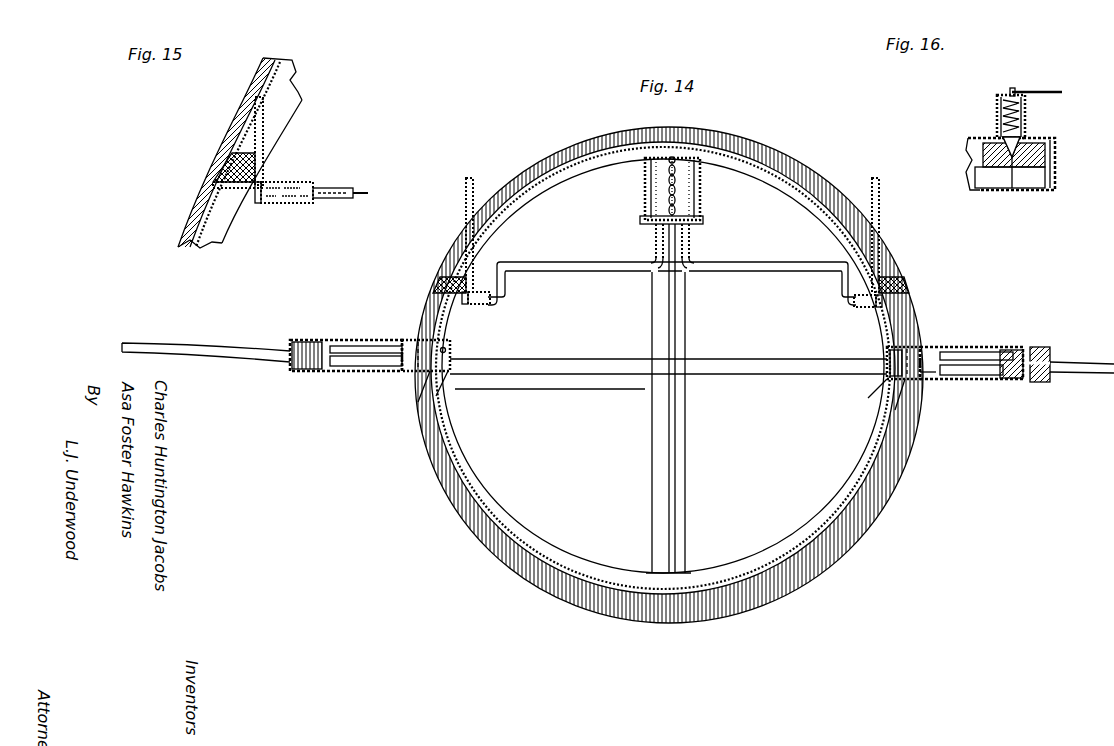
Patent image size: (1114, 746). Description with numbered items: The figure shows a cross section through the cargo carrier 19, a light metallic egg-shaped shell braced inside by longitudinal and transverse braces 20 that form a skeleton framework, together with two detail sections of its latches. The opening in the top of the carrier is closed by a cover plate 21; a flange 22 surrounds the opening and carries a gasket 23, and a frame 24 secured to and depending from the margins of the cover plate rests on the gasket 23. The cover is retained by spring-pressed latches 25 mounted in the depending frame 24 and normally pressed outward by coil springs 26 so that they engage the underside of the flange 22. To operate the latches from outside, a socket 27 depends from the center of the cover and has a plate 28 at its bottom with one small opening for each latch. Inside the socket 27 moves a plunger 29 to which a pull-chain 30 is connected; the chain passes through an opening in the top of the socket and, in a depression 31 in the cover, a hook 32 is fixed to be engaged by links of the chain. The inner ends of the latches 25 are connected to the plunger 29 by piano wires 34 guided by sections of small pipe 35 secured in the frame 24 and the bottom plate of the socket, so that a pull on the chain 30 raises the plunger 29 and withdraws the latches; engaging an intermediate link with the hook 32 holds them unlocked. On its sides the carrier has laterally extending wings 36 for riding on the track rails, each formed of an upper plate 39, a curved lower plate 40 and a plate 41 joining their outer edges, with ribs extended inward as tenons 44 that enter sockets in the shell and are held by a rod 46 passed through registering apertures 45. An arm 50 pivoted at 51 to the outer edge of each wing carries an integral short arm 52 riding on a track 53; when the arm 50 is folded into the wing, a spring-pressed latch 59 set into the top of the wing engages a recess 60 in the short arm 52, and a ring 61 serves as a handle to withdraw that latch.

In FIG. 14, the cargo carrier 19 is at (492, 553).
In FIG. 14, the braces 20 is at (654, 403).
In FIG. 14, the cover plate 21 is at (548, 176).
In FIG. 15, the cover plate 21 is at (232, 132).
In FIG. 14, the flange 22 is at (426, 295).
In FIG. 15, the flange 22 is at (205, 190).
In FIG. 14, the gasket 23 is at (436, 284).
In FIG. 15, the gasket 23 is at (222, 168).
In FIG. 14, the frame 24 is at (474, 272).
In FIG. 15, the frame 24 is at (266, 152).
In FIG. 14, the spring-pressed latches 25 is at (463, 304).
In FIG. 15, the spring-pressed latches 25 is at (256, 200).
In FIG. 14, the coil springs 26 is at (480, 305).
In FIG. 15, the coil springs 26 is at (286, 204).
In FIG. 14, the socket 27 is at (644, 196).
In FIG. 14, the plate 28 is at (692, 233).
In FIG. 14, the plunger 29 is at (704, 220).
In FIG. 14, the pull-chain 30 is at (690, 204).
In FIG. 14, the depression 31 is at (677, 158).
In FIG. 14, the hook 32 is at (668, 157).
In FIG. 15, the piano wires 34 is at (362, 195).
In FIG. 14, the sections of small pipe 35 is at (594, 264).
In FIG. 15, the sections of small pipe 35 is at (340, 181).
In FIG. 14, the wings 36 is at (372, 368).
In FIG. 16, the wings 36 is at (972, 180).
In FIG. 14, the upper plate 39 is at (357, 339).
In FIG. 16, the upper plate 39 is at (980, 138).
In FIG. 14, the lower plate 40 is at (340, 370).
In FIG. 16, the lower plate 40 is at (990, 191).
In FIG. 16, the plate 41 is at (1052, 168).
In FIG. 14, the tenons 44 is at (426, 375).
In FIG. 14, the registering apertures 45 is at (448, 350).
In FIG. 14, the rod 46 is at (462, 358).
In FIG. 14, the arm 50 is at (244, 352).
In FIG. 14, the pivot 51 is at (1038, 346).
In FIG. 14, the short arm 52 is at (376, 349).
In FIG. 16, the short arm 52 is at (1050, 154).
In FIG. 14, the track 53 is at (926, 377).
In FIG. 16, the spring-pressed latch 59 is at (1022, 136).
In FIG. 16, the recess 60 is at (1012, 190).
In FIG. 16, the ring 61 is at (1048, 90).